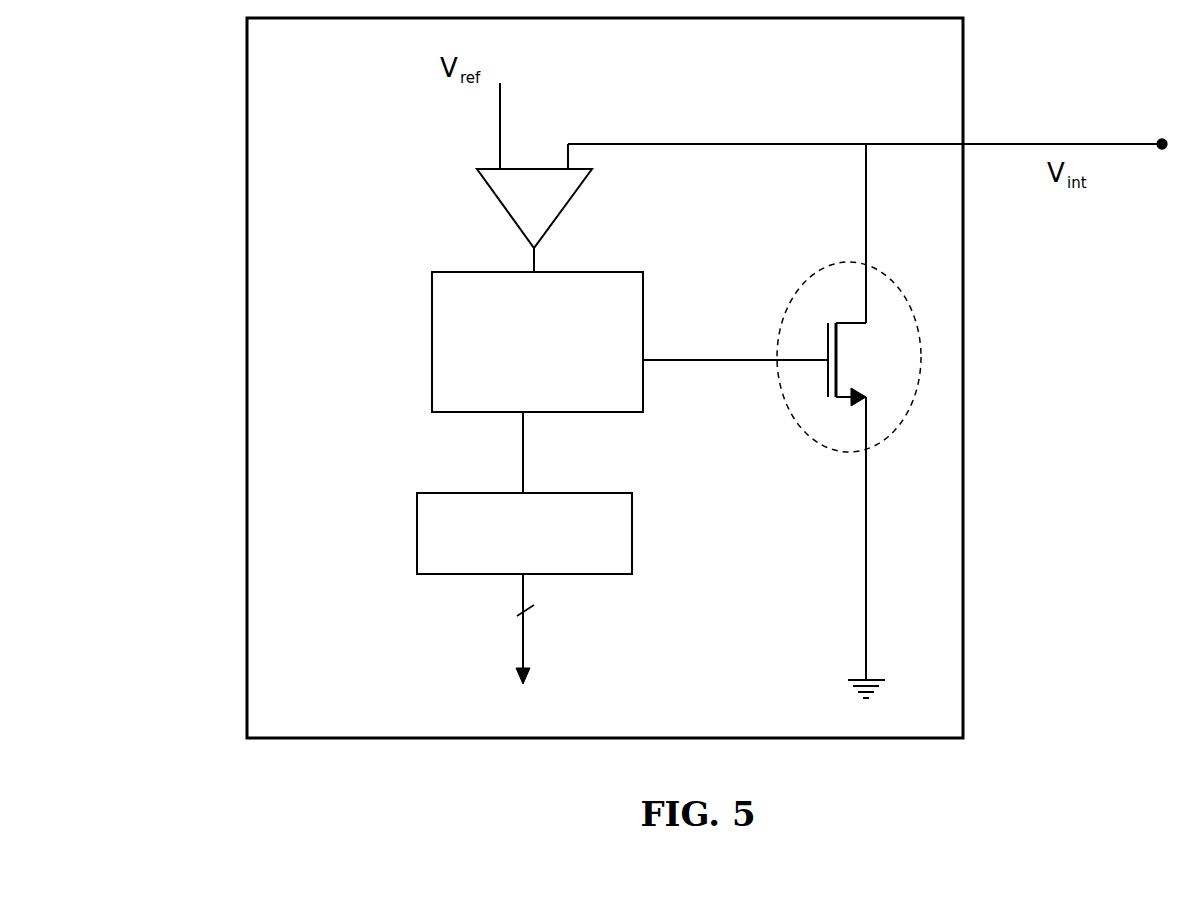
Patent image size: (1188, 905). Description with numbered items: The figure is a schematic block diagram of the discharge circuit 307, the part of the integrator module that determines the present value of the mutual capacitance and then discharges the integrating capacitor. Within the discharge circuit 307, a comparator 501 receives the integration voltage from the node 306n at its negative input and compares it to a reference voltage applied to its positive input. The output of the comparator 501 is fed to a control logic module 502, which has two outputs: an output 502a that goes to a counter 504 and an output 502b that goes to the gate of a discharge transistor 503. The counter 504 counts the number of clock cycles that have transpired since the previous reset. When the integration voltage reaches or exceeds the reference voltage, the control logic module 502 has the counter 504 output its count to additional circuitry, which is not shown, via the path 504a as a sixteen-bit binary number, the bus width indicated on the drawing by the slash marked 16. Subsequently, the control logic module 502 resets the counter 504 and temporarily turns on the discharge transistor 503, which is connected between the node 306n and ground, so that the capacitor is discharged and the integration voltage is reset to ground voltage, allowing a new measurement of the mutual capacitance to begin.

The discharge circuit 307 is at (242, 109).
The node 306n is at (1162, 138).
The comparator 501 is at (487, 194).
The control logic module 502 is at (428, 355).
The output 502a is at (514, 462).
The output 502b is at (727, 368).
The discharge transistor 503 is at (790, 419).
The counter 504 is at (416, 538).
The path 504a is at (558, 629).
The 16-bit output bus width 16 is at (521, 612).